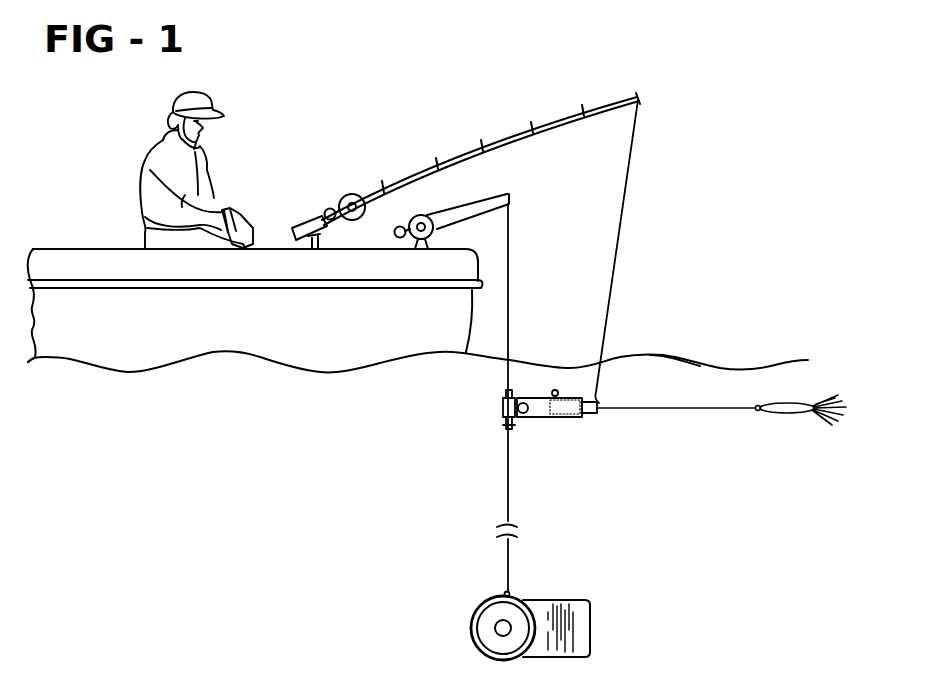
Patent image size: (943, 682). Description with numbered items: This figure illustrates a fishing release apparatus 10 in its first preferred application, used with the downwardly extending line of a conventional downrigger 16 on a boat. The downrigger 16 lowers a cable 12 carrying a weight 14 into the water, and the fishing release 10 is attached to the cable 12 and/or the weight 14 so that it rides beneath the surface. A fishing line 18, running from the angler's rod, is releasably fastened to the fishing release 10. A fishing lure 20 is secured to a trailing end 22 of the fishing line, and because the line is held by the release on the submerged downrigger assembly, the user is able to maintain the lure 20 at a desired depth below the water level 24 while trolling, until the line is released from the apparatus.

The fishing release apparatus 10 is at (468, 140).
The cable 12 is at (507, 474).
The weight 14 is at (484, 599).
The downrigger 16 is at (459, 208).
The fishing line 18 is at (628, 178).
The fishing lure 20 is at (787, 412).
The trailing end 22 is at (666, 412).
The water level 24 is at (702, 363).